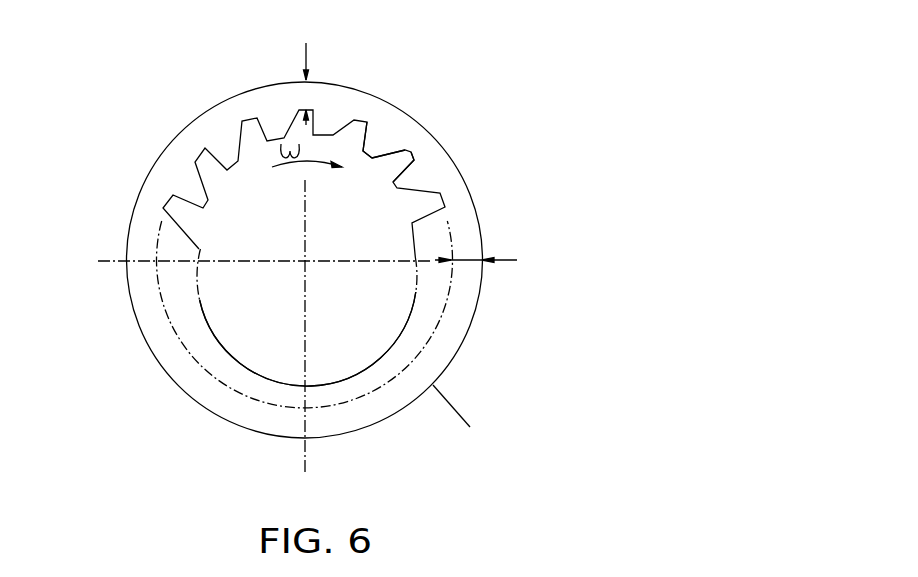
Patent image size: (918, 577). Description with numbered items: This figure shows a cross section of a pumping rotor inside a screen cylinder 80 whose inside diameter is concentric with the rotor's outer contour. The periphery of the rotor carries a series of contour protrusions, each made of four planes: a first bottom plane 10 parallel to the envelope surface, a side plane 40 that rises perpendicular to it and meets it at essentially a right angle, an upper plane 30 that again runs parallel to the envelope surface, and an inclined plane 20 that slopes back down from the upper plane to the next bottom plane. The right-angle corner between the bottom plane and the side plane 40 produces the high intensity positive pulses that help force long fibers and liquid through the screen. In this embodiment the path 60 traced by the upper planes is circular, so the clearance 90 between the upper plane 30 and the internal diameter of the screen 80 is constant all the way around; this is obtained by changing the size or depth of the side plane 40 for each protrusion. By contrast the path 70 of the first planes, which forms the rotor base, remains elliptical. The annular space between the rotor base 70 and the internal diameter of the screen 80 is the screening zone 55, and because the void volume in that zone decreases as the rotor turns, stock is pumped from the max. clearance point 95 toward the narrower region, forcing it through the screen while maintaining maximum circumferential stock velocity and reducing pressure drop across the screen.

The first bottom plane 10 is at (368, 152).
The inclined plane 20 is at (373, 157).
The upper plane 30 is at (385, 155).
The side plane 40 is at (406, 168).
The screening zone 55 is at (222, 358).
The path of the upper plane 60 is at (158, 230).
The path of the first plane 70 is at (197, 298).
The screen cylinder 80 is at (392, 422).
The clearance 90 is at (307, 67).
The max. clearance point 95 is at (498, 260).